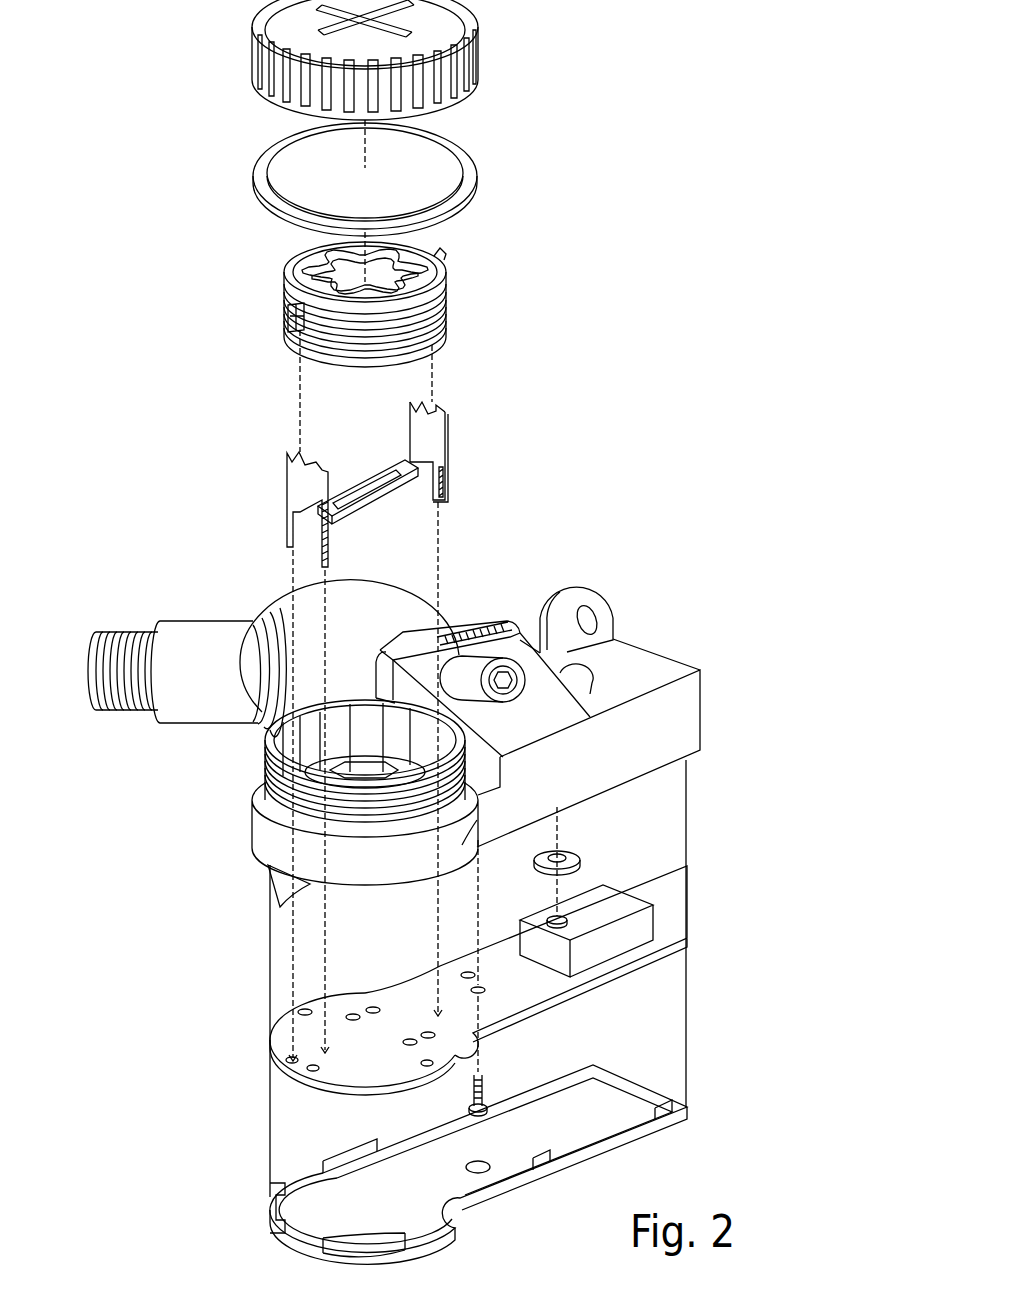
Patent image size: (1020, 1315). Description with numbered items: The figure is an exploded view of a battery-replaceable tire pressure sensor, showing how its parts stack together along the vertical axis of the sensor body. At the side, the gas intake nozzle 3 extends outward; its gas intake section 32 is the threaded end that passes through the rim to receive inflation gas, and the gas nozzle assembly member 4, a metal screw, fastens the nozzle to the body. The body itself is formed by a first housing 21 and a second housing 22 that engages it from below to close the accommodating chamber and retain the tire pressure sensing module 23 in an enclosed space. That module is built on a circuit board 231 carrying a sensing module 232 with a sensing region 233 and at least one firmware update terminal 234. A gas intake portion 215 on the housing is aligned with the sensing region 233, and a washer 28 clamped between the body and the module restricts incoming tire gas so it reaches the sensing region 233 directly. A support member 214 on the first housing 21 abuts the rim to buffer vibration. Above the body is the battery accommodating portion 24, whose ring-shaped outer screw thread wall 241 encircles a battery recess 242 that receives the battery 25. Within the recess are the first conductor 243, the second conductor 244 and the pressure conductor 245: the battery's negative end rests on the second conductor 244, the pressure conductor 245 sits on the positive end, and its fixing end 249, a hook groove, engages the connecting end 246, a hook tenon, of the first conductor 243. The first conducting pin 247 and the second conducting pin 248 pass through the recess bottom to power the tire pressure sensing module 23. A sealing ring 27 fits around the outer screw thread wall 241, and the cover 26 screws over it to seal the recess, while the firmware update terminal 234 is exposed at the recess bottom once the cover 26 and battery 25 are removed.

The gas intake nozzle 3 is at (273, 636).
The gas intake section 32 is at (113, 627).
The gas nozzle assembly member 4 is at (480, 658).
The first housing 21 is at (633, 647).
The second housing 22 is at (300, 1207).
The tire pressure sensing module 23 is at (483, 980).
The battery accommodating portion 24 is at (338, 803).
The battery 25 is at (378, 285).
The cover 26 is at (465, 8).
The sealing ring 27 is at (478, 172).
The washer 28 is at (567, 848).
The support member 214 is at (262, 878).
The gas intake portion 215 is at (567, 645).
The circuit board 231 is at (283, 1043).
The sensing module 232 is at (648, 915).
The sensing region 233 is at (570, 917).
The firmware update terminal 234 is at (410, 1040).
The outer screw thread wall 241 is at (257, 808).
The battery recess 242 is at (473, 842).
The first conductor 243 is at (477, 420).
The second conductor 244 is at (350, 477).
The pressure conductor 245 is at (441, 262).
The connecting end 246 is at (433, 403).
The first conducting pin 247 is at (447, 483).
The second conducting pin 248 is at (332, 543).
The fixing end 249 is at (296, 318).